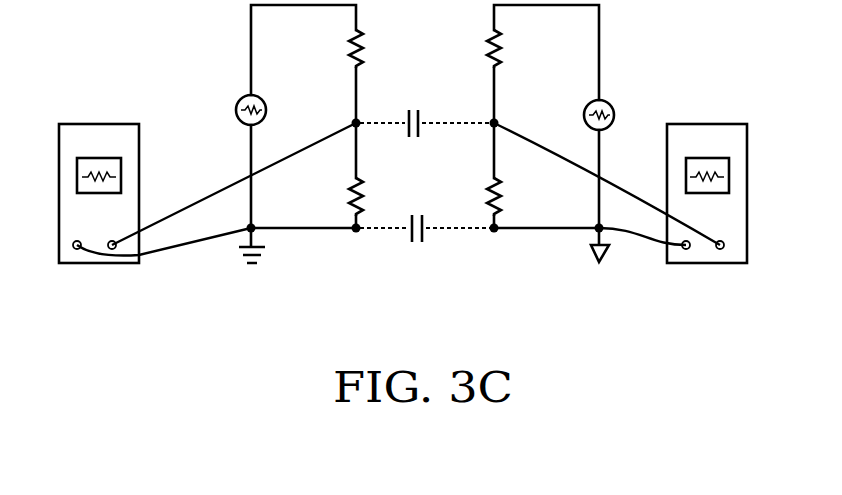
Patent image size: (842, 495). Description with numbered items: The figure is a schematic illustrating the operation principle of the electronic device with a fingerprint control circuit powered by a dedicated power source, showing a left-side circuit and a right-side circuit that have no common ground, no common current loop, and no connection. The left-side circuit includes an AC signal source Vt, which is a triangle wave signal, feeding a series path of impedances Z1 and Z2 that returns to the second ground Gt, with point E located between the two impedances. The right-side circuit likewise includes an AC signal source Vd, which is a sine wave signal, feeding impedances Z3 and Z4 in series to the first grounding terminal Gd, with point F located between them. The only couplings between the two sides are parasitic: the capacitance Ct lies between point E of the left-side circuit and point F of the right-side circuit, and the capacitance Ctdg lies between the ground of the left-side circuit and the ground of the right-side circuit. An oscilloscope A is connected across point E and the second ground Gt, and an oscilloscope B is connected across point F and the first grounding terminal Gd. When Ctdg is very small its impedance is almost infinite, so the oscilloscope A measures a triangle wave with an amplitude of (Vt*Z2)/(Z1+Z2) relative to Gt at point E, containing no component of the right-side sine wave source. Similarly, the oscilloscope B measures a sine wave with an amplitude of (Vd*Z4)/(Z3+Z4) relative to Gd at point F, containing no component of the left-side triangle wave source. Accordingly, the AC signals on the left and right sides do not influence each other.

The oscilloscope A is at (207, 222).
The oscilloscope B is at (620, 223).
The AC signal source Vt is at (230, 111).
The AC signal source Vd is at (617, 114).
The impedance Z1 is at (372, 50).
The impedance Z2 is at (374, 199).
The impedance Z3 is at (474, 48).
The impedance Z4 is at (475, 199).
The point E is at (343, 106).
The point F is at (505, 108).
The parasitic capacitance Ct is at (425, 106).
The parasitic capacitance Ctdg is at (425, 247).
The second ground Gt is at (255, 264).
The first grounding terminal Gd is at (608, 260).